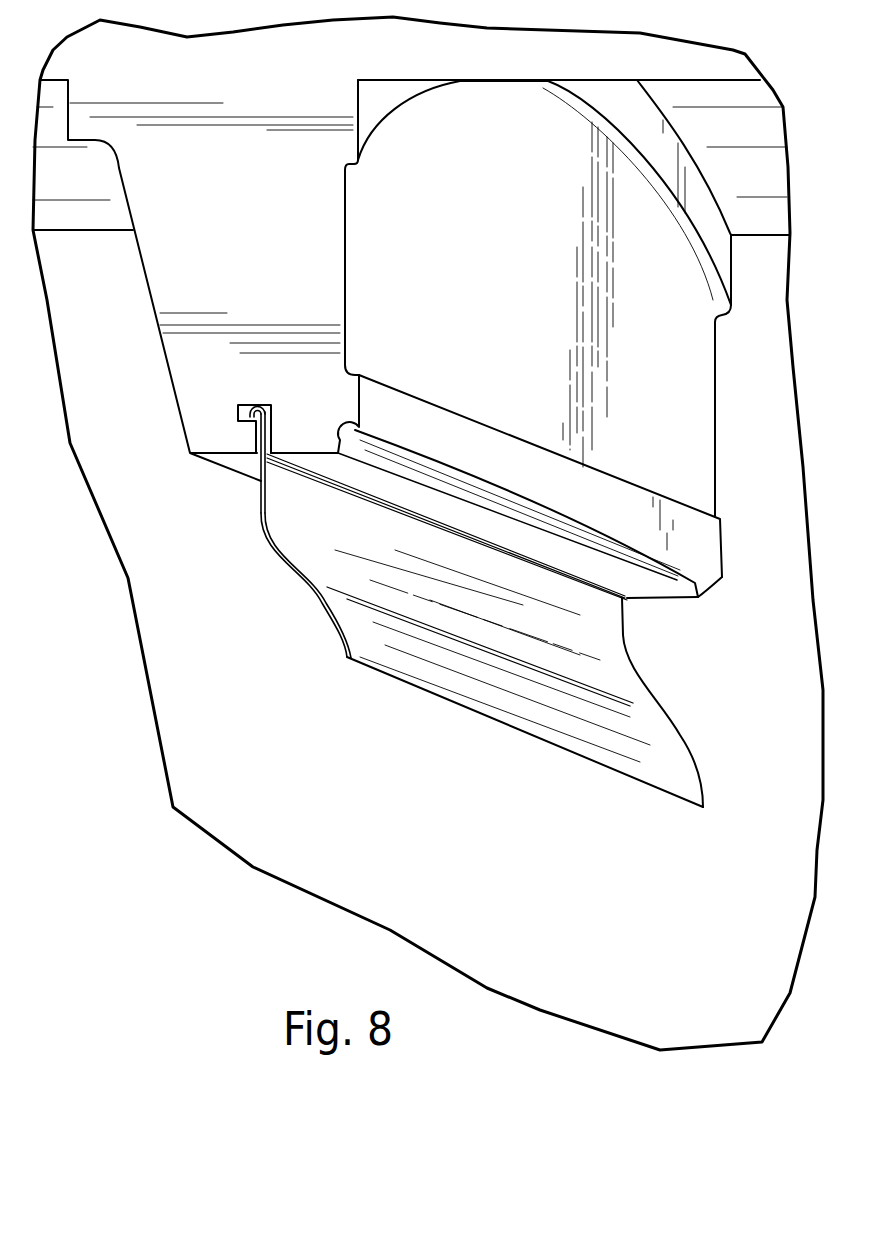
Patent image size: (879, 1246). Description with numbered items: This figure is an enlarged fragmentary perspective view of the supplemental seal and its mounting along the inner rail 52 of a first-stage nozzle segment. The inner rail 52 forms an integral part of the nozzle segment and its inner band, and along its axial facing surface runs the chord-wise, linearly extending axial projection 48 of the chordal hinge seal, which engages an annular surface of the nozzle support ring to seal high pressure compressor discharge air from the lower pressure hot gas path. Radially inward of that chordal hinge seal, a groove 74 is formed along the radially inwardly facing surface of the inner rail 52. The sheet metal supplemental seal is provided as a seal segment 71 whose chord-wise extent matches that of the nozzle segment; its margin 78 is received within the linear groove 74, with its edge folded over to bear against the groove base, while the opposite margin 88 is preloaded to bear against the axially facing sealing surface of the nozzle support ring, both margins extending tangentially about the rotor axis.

The axial projection 48 is at (345, 397).
The inner rail 52 is at (411, 315).
The seal segment 71 is at (297, 527).
The groove 74 is at (241, 415).
The margin 78 is at (260, 434).
The opposite margin 88 is at (403, 667).